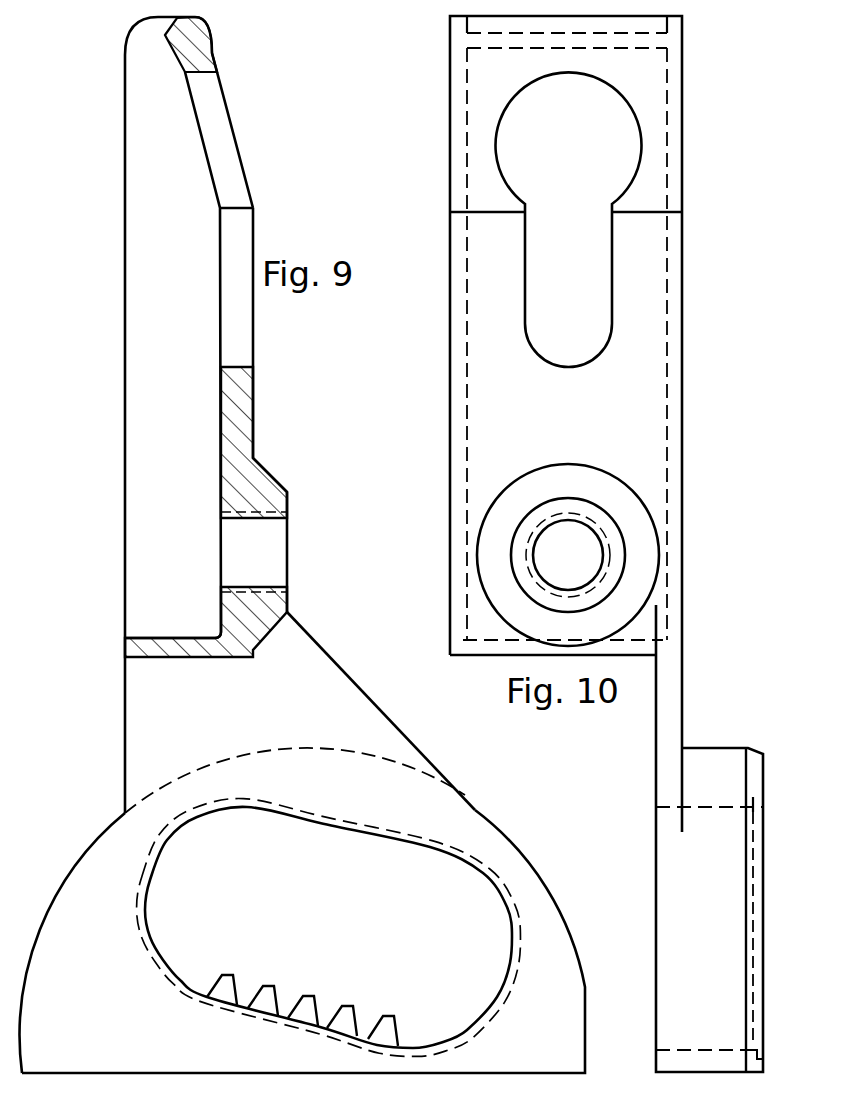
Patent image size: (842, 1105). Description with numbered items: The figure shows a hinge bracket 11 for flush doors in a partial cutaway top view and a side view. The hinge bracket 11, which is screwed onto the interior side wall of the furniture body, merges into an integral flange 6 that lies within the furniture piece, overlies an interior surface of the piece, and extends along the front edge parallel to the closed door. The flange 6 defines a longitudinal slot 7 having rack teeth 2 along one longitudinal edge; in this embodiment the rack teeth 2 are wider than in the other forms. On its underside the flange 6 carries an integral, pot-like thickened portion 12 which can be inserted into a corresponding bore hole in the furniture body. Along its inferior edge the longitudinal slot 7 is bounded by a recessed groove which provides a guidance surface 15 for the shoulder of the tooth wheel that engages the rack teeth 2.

In FIG. 9, the rack teeth 2 is at (340, 1003).
In FIG. 9, the flange 6 is at (348, 683).
In FIG. 9, the longitudinal slot 7 is at (343, 830).
In FIG. 9, the hinge bracket 11 is at (258, 403).
In FIG. 9, the thickened portion 12 is at (77, 868).
In FIG. 10, the thickened portion 12 is at (720, 748).
In FIG. 10, the guidance surface 15 is at (757, 802).